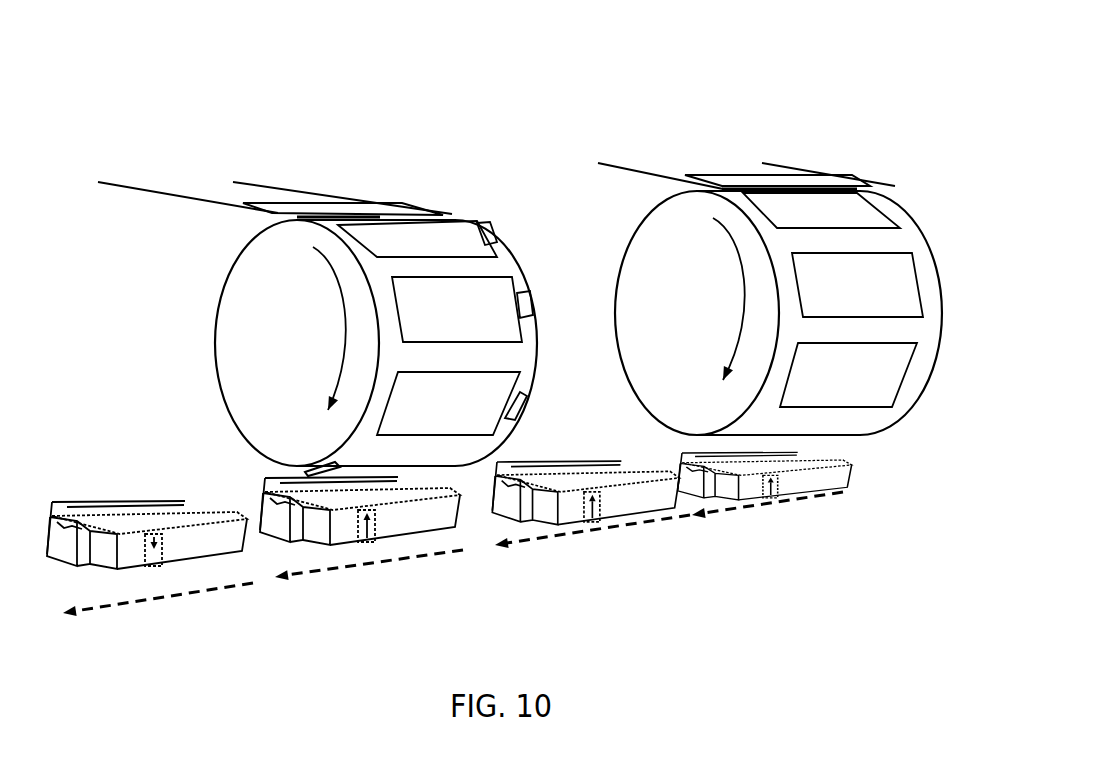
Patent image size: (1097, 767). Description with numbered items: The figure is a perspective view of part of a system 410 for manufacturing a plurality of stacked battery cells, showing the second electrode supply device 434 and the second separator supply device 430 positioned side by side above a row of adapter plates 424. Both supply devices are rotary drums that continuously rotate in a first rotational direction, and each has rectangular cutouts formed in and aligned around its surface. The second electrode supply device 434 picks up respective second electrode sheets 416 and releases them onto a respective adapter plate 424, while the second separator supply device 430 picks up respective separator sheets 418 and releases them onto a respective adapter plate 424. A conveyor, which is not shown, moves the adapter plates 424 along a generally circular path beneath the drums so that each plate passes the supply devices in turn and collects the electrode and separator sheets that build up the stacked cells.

The system 410 is at (590, 112).
The second electrode supply device 434 is at (248, 343).
The second separator supply device 430 is at (655, 268).
The second electrode sheets 416 is at (483, 307).
The separator sheets 418 is at (897, 298).
The adapter plates 424 is at (237, 552).